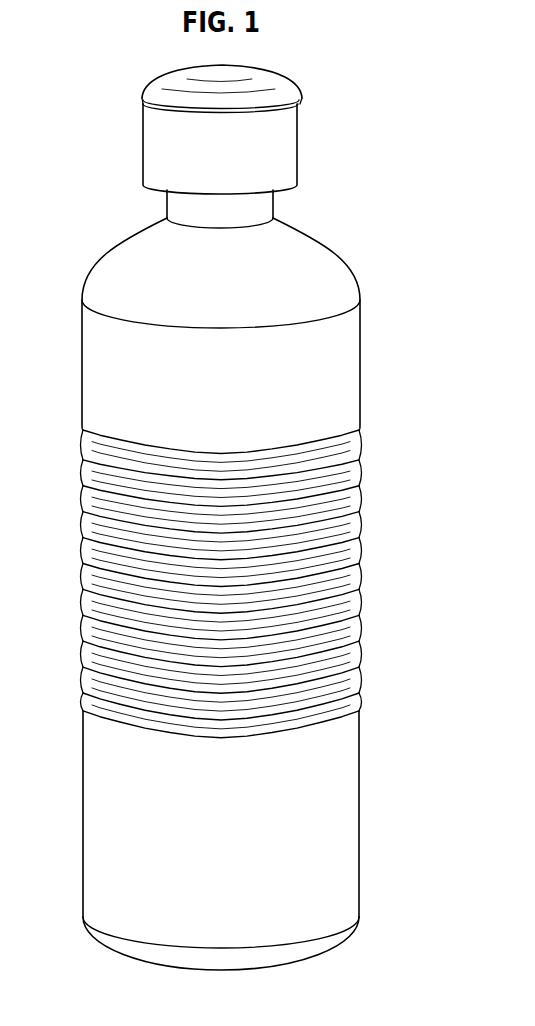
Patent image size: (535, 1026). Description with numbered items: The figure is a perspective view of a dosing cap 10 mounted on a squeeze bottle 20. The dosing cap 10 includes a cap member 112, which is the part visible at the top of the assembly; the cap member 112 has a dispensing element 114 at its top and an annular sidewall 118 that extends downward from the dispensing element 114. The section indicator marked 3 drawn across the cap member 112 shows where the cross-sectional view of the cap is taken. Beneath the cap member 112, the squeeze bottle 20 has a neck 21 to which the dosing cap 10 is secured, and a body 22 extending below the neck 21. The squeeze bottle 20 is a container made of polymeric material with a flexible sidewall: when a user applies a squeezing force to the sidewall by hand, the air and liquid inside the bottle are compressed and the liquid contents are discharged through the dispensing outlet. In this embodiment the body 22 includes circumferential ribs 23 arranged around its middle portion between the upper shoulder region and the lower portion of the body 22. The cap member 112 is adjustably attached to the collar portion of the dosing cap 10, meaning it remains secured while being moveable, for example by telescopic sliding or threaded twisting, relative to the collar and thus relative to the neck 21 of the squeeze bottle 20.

The dosing cap 10 is at (352, 80).
The cap member 112 is at (125, 148).
The dispensing element 114 is at (288, 62).
The annular sidewall 118 is at (236, 168).
The section line indicator for FIG. 3 is at (139, 77).
The neck 21 is at (266, 206).
The squeeze bottle 20 is at (381, 366).
The circumferential ribs 23 is at (83, 447).
The body 22 is at (346, 796).